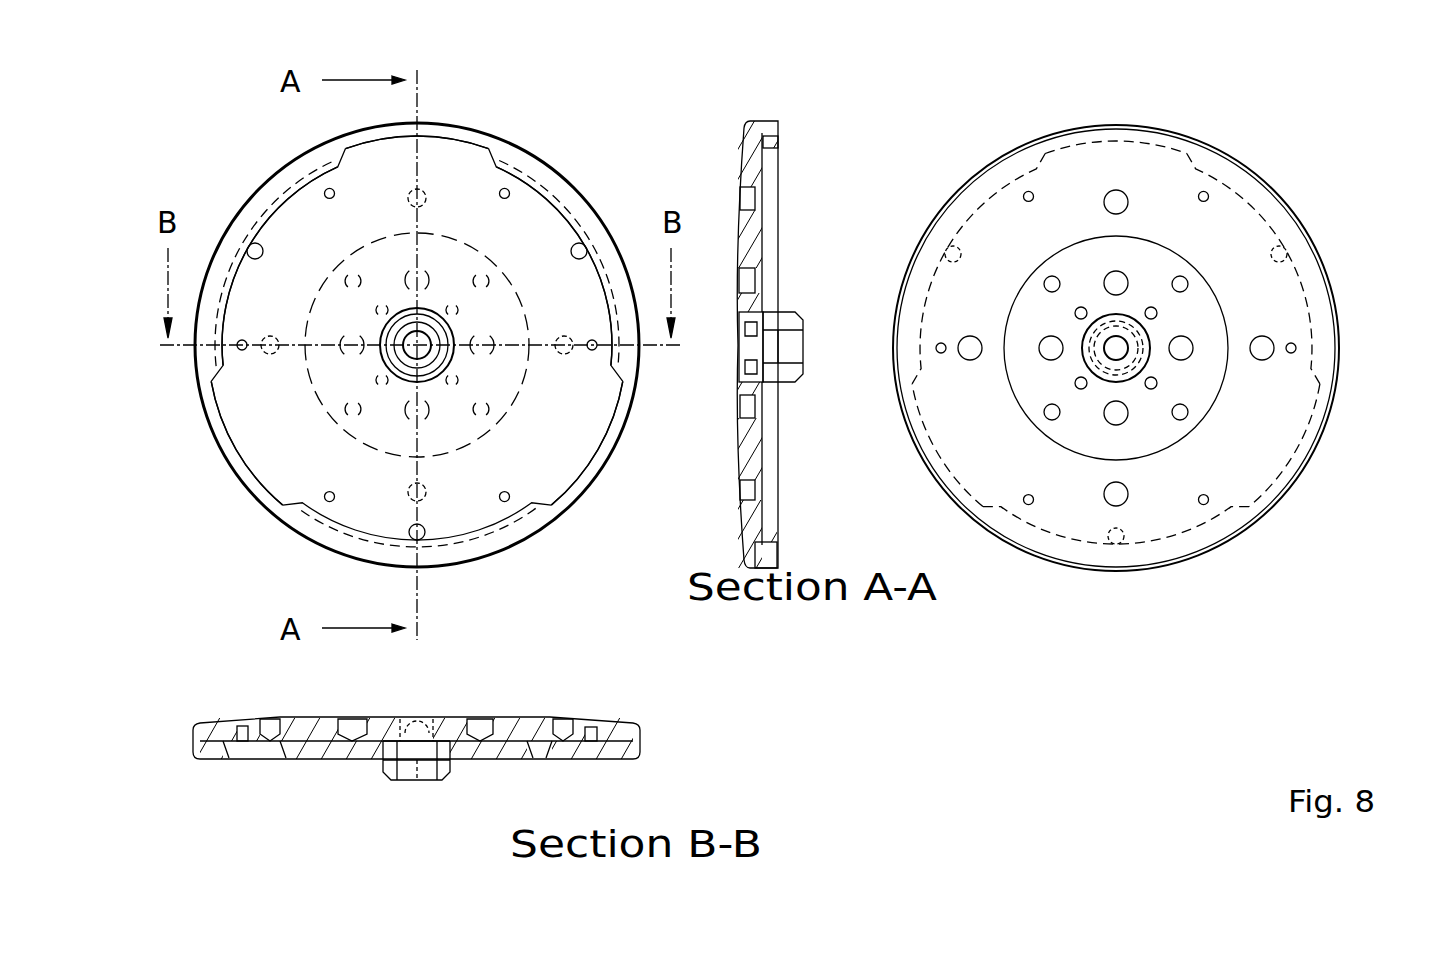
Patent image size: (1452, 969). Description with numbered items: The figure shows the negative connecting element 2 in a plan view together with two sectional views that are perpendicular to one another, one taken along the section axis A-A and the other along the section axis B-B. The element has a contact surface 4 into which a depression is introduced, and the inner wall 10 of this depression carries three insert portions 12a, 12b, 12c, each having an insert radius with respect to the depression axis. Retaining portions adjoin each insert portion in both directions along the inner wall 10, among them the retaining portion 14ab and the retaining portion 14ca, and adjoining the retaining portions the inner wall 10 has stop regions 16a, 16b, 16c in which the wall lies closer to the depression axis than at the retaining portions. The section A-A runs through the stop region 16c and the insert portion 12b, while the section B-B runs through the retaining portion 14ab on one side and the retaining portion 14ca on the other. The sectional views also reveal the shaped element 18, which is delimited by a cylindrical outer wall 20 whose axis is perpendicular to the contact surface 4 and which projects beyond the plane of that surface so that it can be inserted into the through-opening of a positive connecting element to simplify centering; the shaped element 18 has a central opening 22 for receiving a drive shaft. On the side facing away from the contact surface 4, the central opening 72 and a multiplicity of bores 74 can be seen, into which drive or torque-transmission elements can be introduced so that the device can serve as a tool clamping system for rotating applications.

The negative connecting element 2 is at (300, 540).
The contact surface 4 is at (355, 543).
The inner wall 10 is at (232, 447).
The insert portion 12a is at (235, 411).
The insert portion 12b is at (362, 143).
The insert portion 12c is at (593, 456).
The retaining portion 14ab is at (228, 305).
The retaining portion 14ca is at (600, 297).
The stop region 16a is at (251, 246).
The stop region 16b is at (579, 244).
The stop region 16c is at (421, 537).
The shaped element 18 is at (783, 320).
The cylindrical outer wall 20 is at (793, 380).
The central opening 22 is at (788, 345).
The central opening 72 is at (1113, 347).
The bores 74 is at (752, 198).